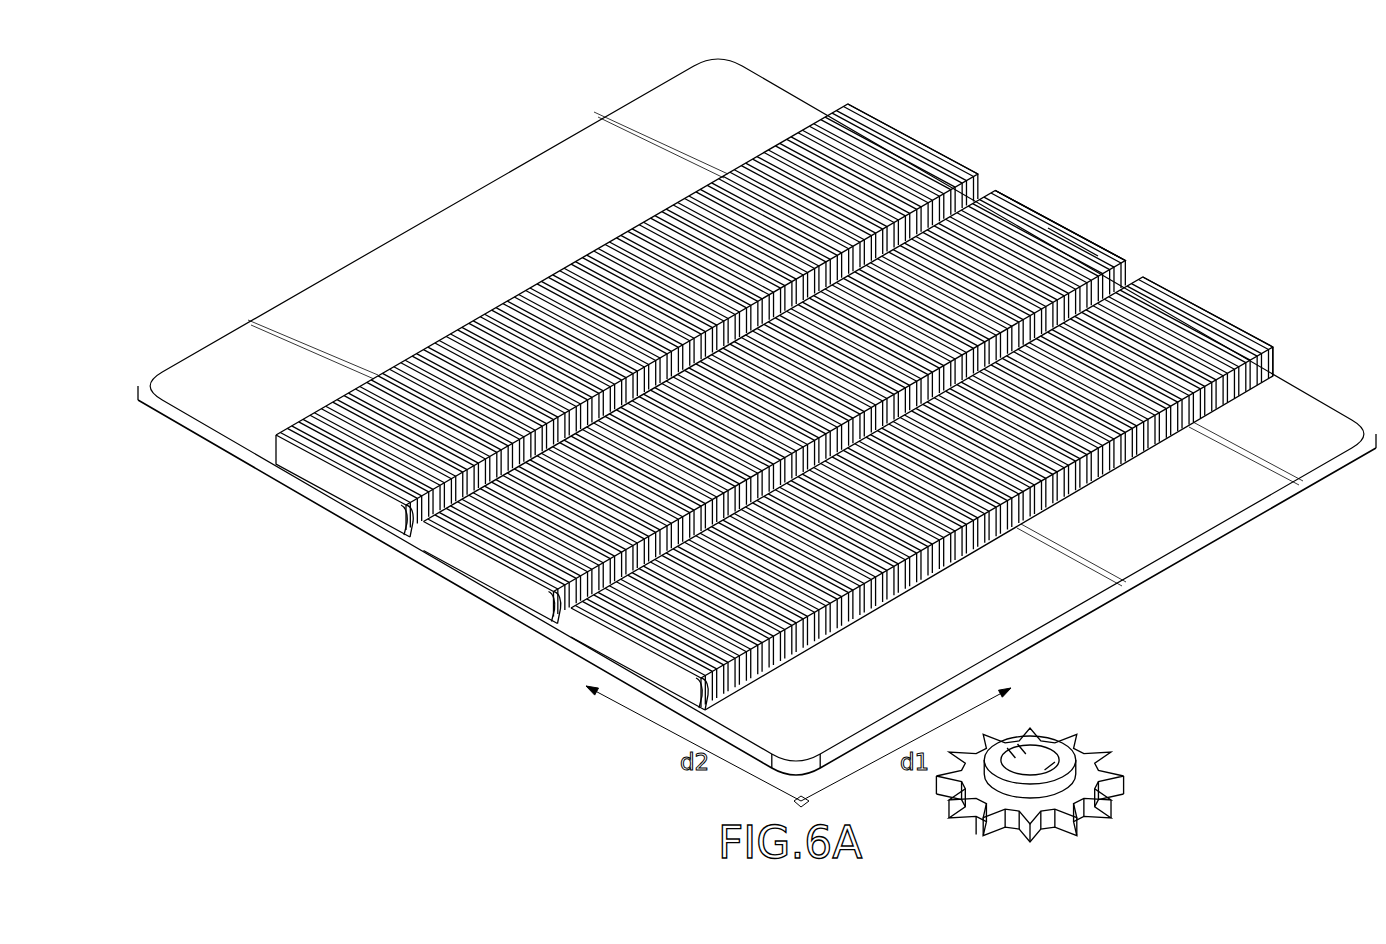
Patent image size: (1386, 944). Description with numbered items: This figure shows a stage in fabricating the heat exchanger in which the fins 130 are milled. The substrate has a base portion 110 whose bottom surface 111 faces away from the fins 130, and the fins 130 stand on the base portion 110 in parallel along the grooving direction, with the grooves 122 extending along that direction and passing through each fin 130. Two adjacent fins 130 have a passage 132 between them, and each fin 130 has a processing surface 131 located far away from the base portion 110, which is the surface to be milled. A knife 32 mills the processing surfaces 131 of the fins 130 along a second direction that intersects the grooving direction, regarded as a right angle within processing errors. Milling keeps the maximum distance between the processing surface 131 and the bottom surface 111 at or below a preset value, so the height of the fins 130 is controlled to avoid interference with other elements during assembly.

The base portion 110 is at (1017, 641).
The bottom surface 111 is at (410, 548).
The groove 122 is at (982, 170).
The fin 130 is at (1272, 350).
The processing surface 131 is at (1017, 220).
The passage 132 is at (1037, 237).
The knife 32 is at (1090, 748).